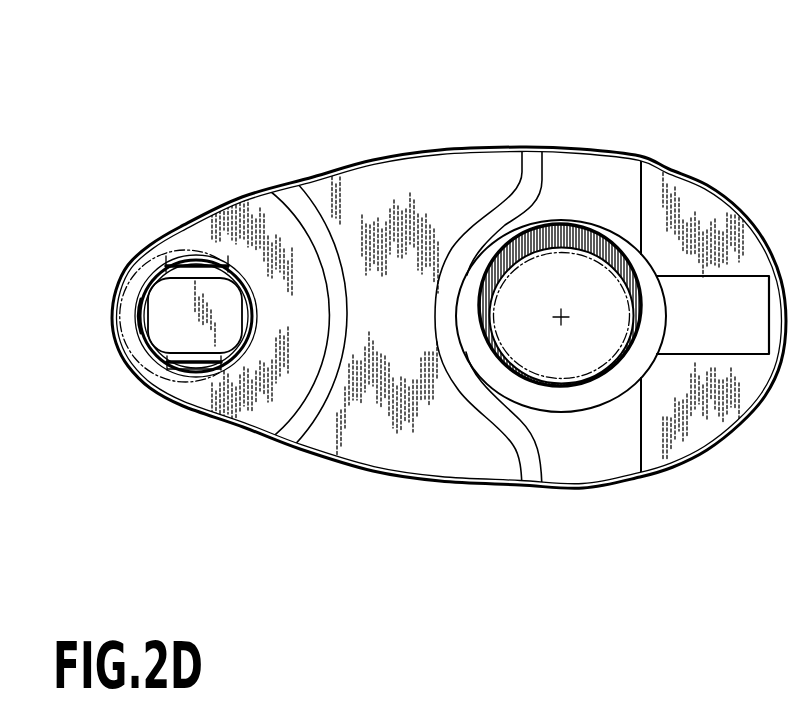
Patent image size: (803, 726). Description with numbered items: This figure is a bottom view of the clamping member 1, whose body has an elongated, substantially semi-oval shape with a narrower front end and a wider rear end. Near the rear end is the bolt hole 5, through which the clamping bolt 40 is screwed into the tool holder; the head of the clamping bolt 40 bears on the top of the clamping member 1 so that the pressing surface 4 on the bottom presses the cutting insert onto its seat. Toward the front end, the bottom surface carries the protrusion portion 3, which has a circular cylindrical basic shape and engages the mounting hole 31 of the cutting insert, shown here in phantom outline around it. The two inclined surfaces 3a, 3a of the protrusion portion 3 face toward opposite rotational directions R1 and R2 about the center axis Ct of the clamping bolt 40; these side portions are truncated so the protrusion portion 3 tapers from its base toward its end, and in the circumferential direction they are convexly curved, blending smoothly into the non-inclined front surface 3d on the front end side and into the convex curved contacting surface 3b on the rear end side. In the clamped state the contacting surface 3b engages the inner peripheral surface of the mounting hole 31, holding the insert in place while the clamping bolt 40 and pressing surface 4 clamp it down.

The clamping member 1 is at (408, 147).
The protrusion portion 3 is at (178, 283).
The inclined surfaces 3a is at (202, 258).
The contacting surface 3b is at (258, 313).
The non-inclined front surface 3d is at (140, 324).
The mounting hole 31 is at (126, 300).
The pressing surface 4 is at (307, 242).
The clamping bolt 40 is at (493, 312).
The bolt hole 5 is at (575, 380).
The center axis Ct is at (563, 317).
The rotational direction R1 is at (290, 72).
The rotational direction R2 is at (217, 443).